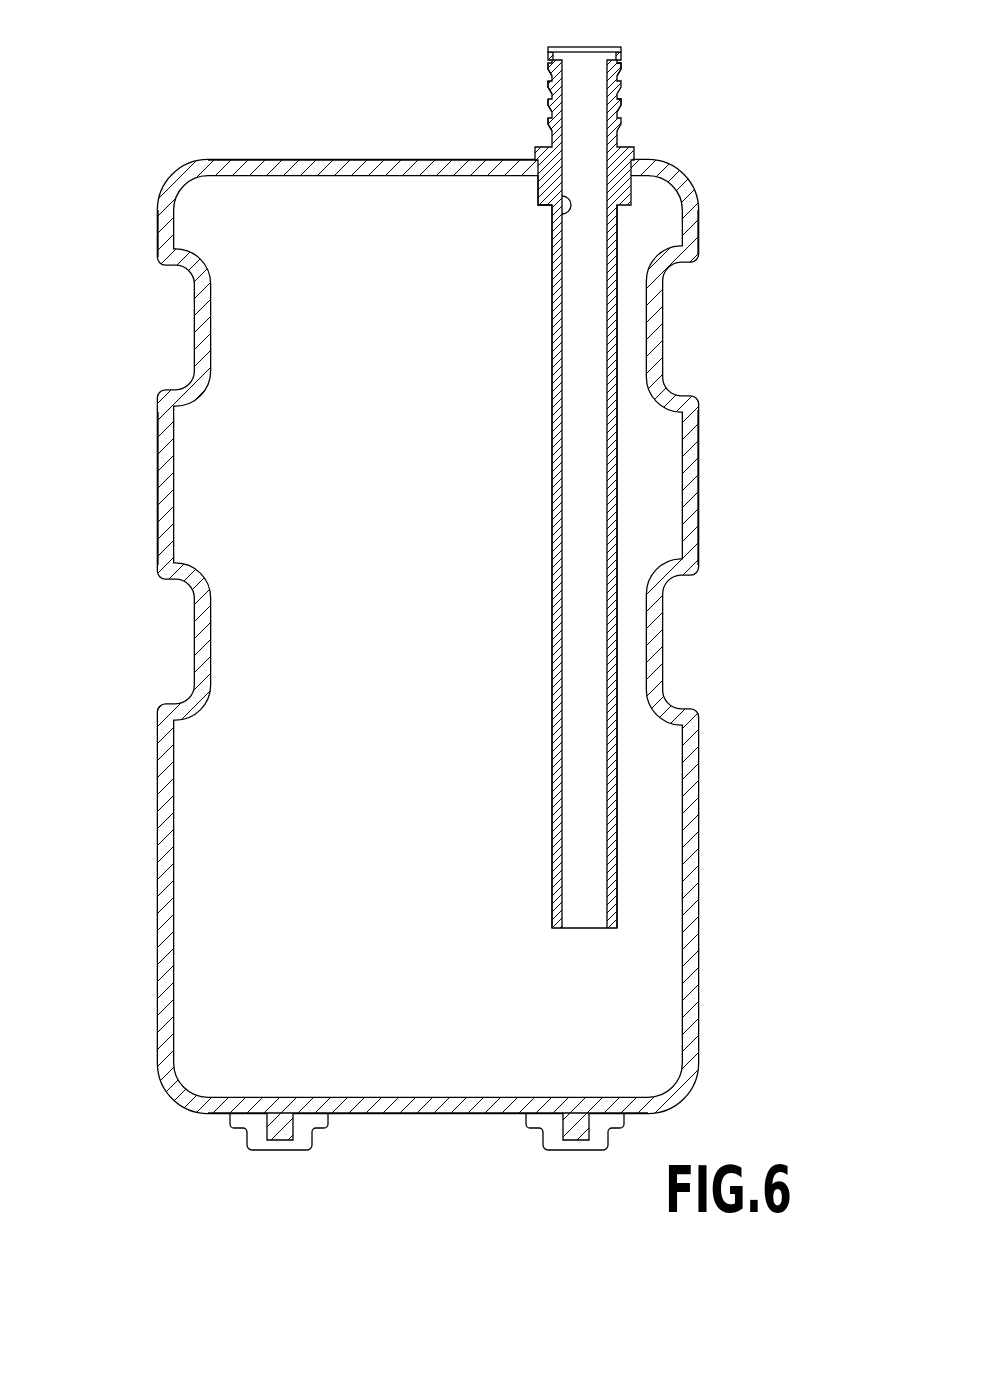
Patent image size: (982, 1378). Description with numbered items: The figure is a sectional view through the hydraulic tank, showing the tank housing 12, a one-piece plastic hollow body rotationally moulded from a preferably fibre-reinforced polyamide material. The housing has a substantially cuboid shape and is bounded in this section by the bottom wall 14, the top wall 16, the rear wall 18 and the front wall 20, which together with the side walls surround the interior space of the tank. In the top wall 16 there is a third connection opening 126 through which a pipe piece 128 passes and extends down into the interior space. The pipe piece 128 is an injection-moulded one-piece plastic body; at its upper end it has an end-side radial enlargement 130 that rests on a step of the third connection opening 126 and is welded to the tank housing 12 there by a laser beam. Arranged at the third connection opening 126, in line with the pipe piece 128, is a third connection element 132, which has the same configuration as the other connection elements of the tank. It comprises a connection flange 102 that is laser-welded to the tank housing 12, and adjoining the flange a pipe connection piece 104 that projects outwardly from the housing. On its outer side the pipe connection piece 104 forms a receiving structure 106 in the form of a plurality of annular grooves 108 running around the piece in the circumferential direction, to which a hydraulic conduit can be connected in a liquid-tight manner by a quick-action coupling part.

The tank housing 12 is at (180, 158).
The bottom wall 14 is at (431, 1113).
The top wall 16 is at (300, 162).
The rear wall 18 is at (160, 447).
The front wall 20 is at (698, 443).
The connection flange 102 is at (624, 468).
The pipe connection piece 104 is at (548, 57).
The receiving structure 106 is at (626, 79).
The annular grooves 108 is at (548, 117).
The third connection opening 126 is at (568, 212).
The pipe piece 128 is at (552, 373).
The end-side radial enlargement 130 is at (547, 173).
The third connection element 132 is at (626, 117).